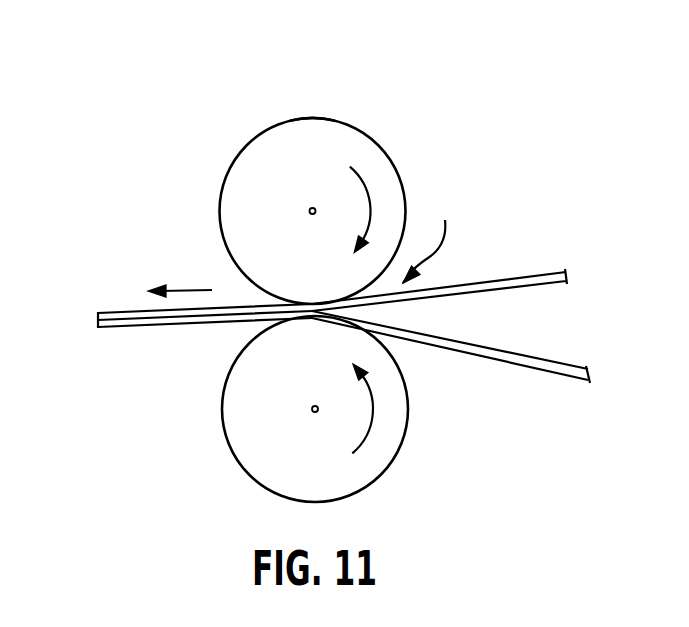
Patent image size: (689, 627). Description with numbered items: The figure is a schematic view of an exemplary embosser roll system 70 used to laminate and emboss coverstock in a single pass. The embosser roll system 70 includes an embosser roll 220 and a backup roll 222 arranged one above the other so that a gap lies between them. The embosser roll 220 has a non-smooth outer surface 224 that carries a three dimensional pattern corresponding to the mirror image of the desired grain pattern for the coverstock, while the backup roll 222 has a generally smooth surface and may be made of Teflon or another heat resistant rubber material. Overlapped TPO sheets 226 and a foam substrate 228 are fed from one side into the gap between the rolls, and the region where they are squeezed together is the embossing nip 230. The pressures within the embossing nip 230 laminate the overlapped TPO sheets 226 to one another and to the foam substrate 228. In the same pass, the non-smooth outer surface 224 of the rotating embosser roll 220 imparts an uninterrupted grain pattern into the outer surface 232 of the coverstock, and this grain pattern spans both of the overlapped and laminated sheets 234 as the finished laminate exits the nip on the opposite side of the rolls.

The embosser roll system 70 is at (502, 172).
The embosser roll 220 is at (367, 135).
The backup roll 222 is at (404, 436).
The non-smooth outer surface 224 is at (311, 118).
The overlapped TPO sheets 226 is at (507, 279).
The foam substrate 228 is at (537, 360).
The embossing nip 230 is at (439, 234).
The outer surface of the coverstock 232 is at (115, 309).
The overlapped and laminated sheets 234 is at (216, 318).